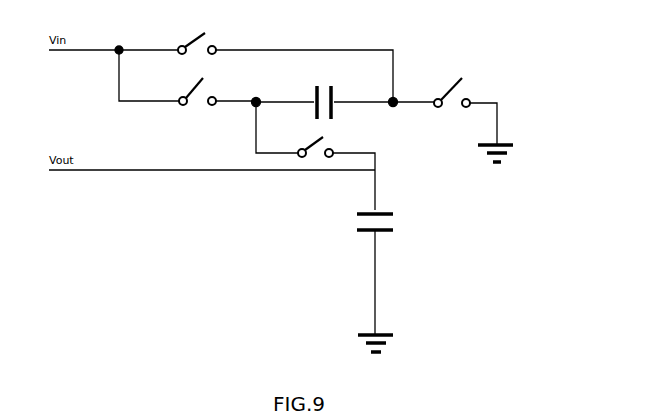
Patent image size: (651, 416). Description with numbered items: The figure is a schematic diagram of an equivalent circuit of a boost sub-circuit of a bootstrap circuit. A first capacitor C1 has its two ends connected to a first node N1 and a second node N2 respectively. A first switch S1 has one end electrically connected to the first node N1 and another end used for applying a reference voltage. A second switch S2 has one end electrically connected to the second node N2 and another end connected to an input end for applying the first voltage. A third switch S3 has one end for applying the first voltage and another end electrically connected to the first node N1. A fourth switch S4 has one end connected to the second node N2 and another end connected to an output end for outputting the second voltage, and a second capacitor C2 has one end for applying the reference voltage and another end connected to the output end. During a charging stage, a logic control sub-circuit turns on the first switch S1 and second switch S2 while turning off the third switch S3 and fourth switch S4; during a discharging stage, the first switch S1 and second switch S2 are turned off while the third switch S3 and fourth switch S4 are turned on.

The first switch S1 is at (499, 111).
The second switch S2 is at (215, 104).
The third switch S3 is at (285, 55).
The fourth switch S4 is at (332, 170).
The first capacitor C1 is at (324, 93).
The second capacitor C2 is at (400, 284).
The first node N1 is at (410, 116).
The second node N2 is at (274, 115).